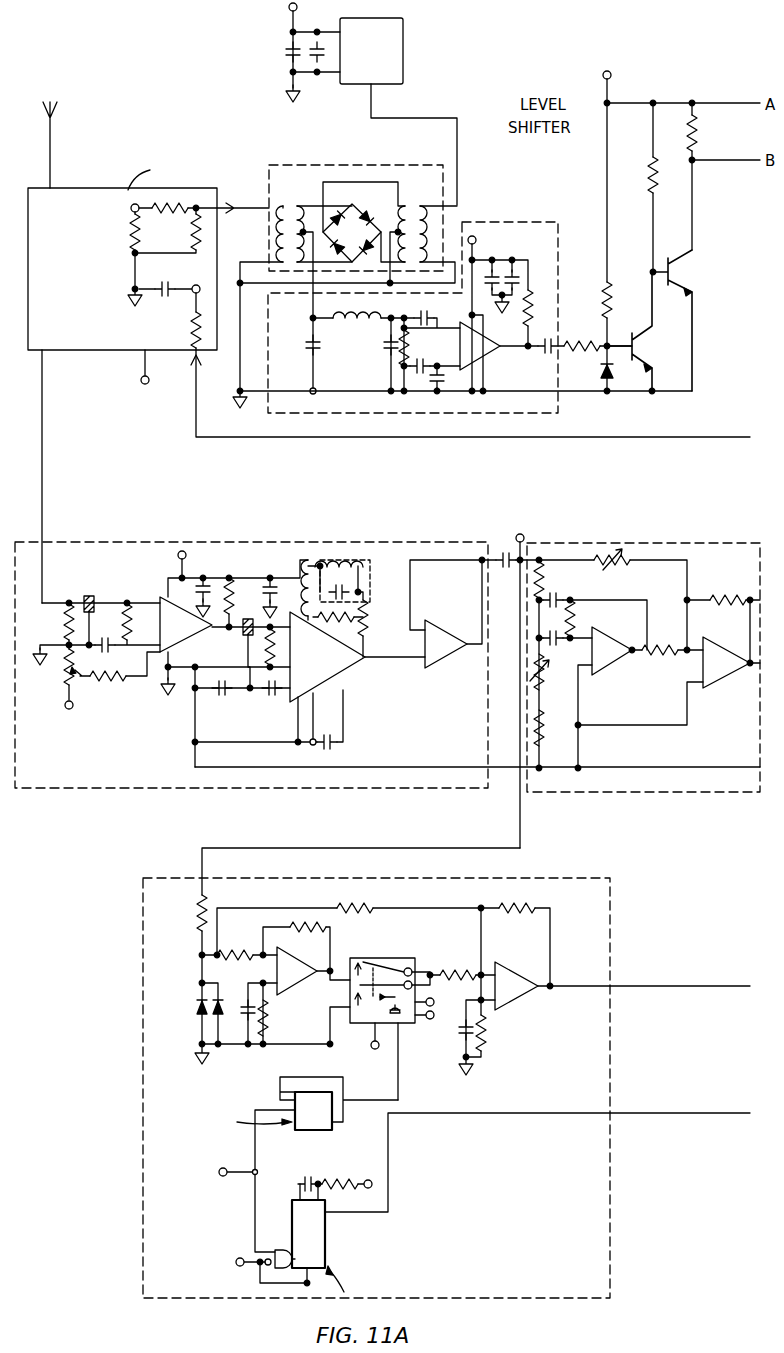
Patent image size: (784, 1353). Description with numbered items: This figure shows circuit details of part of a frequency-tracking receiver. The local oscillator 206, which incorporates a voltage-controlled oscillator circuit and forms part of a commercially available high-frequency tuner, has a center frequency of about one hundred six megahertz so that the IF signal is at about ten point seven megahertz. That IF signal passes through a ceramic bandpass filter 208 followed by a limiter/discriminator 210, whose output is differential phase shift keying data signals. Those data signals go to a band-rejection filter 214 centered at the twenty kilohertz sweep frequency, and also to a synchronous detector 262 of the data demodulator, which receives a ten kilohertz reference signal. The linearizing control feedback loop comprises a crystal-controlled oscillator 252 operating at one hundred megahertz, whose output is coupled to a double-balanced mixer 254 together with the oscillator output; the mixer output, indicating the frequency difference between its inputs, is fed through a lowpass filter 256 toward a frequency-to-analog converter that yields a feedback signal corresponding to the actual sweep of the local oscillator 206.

The local oscillator 206 is at (208, 451).
The crystal-controlled oscillator 252 is at (404, 48).
The double-balanced mixer 254 is at (327, 163).
The lowpass filter 256 is at (497, 226).
The ceramic bandpass filter 208 is at (395, 648).
The limiter/discriminator 210 is at (238, 542).
The band-rejection filter 214 is at (600, 543).
The synchronous detector 262 is at (612, 904).